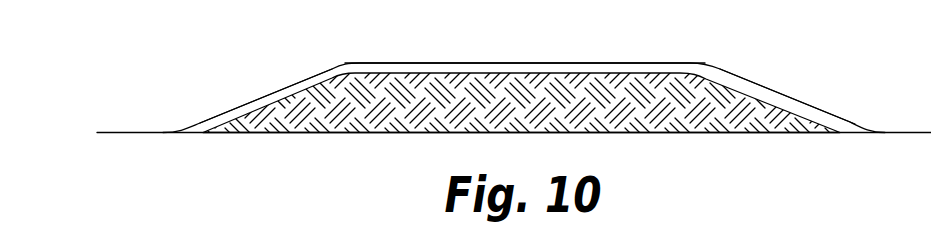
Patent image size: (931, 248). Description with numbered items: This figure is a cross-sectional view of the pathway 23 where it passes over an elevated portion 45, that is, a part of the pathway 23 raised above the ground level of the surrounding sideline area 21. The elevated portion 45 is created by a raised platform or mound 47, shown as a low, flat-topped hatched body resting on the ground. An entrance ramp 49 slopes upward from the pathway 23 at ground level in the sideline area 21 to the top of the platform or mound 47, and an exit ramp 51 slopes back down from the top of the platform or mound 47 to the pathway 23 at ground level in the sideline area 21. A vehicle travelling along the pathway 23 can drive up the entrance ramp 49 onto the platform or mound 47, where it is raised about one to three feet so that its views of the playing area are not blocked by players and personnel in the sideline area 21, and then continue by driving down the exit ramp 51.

The sideline area 21 is at (491, 70).
The pathway 23 is at (217, 113).
The elevated portion 45 is at (486, 67).
The raised platform or mound 47 is at (652, 105).
The entrance ramp 49 is at (272, 98).
The exit ramp 51 is at (773, 97).